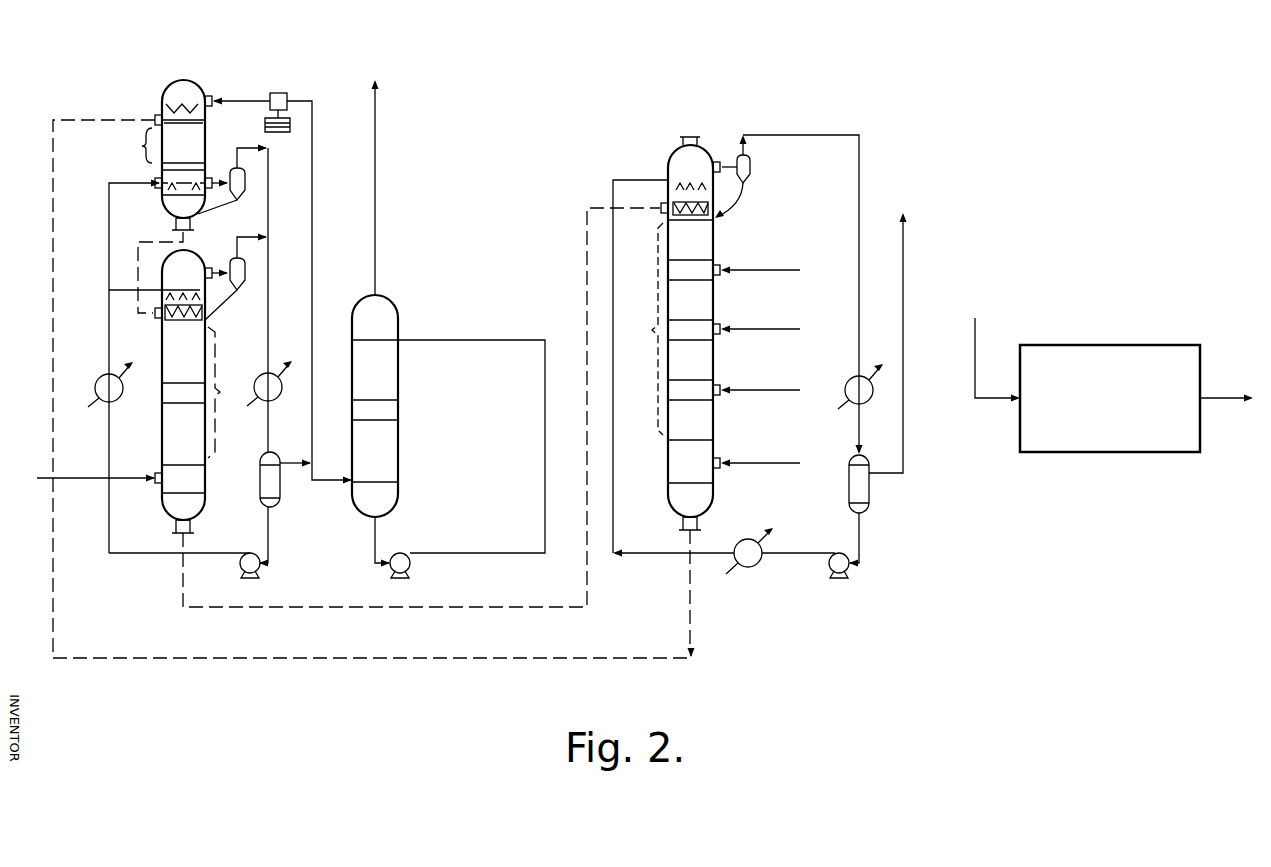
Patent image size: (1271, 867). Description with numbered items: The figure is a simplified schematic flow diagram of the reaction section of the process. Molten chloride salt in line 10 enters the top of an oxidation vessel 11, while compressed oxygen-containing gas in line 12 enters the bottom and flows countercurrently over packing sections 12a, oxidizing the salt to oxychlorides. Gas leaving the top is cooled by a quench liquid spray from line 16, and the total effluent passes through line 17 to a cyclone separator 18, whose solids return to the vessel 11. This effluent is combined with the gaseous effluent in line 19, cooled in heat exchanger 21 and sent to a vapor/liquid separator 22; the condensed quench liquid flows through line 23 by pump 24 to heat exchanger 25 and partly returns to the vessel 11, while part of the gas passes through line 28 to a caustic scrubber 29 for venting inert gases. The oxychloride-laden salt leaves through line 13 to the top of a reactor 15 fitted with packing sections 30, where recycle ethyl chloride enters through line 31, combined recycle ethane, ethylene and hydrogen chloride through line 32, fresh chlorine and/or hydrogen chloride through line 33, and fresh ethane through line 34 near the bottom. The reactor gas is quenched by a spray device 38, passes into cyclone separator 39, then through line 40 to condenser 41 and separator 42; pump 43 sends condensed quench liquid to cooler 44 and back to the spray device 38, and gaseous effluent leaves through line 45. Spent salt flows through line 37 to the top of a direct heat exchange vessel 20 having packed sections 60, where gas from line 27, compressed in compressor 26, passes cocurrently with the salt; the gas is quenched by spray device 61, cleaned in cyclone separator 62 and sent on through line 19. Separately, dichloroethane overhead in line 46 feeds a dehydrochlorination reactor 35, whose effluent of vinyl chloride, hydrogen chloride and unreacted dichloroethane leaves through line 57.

The molten salt line 10 is at (138, 264).
The oxidation vessel 11 is at (203, 260).
The oxygen-containing gas line 12 is at (73, 480).
The packing sections 12a is at (230, 392).
The molten salt withdrawal line 13 is at (183, 580).
The reactor 15 is at (710, 150).
The quench liquid line 16 is at (123, 292).
The gaseous effluent line 17 is at (210, 278).
The cyclone separator 18 is at (244, 281).
The gaseous effluent line 19 is at (269, 340).
The direct heat exchange vessel 20 is at (165, 85).
The heat exchanger 21 is at (275, 398).
The vapor/liquid separator 22 is at (280, 485).
The quench liquid line 23 is at (270, 538).
The pump 24 is at (242, 562).
The heat exchanger 25 is at (97, 377).
The compressor 26 is at (278, 93).
The gas line 27 is at (312, 253).
The gas line 28 is at (325, 478).
The caustic scrubber 29 is at (397, 310).
The packing sections 30 is at (641, 329).
The recycle ethyl chloride line 31 is at (778, 268).
The recycle components line 32 is at (783, 328).
The fresh chlorine/hydrogen chloride line 33 is at (787, 390).
The fresh feed ethane line 34 is at (783, 462).
The dehydrochlorination reactor 35 is at (1088, 453).
The molten salt line 37 is at (690, 612).
The spray device 38 is at (683, 180).
The cyclone separator 39 is at (118, 116).
The effluent line 40 is at (818, 135).
The condenser 41 is at (847, 383).
The separator 42 is at (870, 486).
The pump 43 is at (830, 565).
The cooler 44 is at (743, 540).
The gaseous effluent line 45 is at (903, 252).
The overhead line 46 is at (975, 336).
The reaction effluent line 57 is at (1223, 400).
The packed sections 60 is at (128, 145).
The spray device 61 is at (162, 187).
The cyclone separator 62 is at (245, 180).